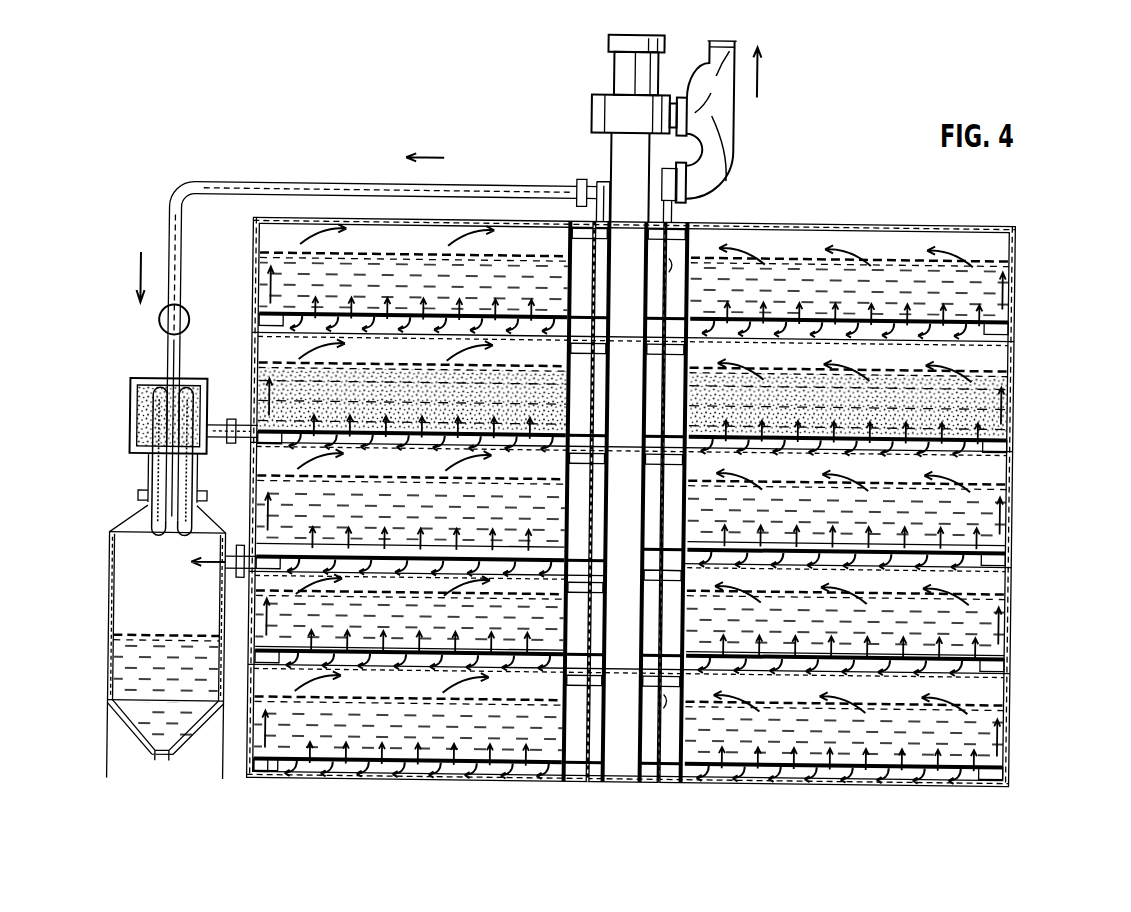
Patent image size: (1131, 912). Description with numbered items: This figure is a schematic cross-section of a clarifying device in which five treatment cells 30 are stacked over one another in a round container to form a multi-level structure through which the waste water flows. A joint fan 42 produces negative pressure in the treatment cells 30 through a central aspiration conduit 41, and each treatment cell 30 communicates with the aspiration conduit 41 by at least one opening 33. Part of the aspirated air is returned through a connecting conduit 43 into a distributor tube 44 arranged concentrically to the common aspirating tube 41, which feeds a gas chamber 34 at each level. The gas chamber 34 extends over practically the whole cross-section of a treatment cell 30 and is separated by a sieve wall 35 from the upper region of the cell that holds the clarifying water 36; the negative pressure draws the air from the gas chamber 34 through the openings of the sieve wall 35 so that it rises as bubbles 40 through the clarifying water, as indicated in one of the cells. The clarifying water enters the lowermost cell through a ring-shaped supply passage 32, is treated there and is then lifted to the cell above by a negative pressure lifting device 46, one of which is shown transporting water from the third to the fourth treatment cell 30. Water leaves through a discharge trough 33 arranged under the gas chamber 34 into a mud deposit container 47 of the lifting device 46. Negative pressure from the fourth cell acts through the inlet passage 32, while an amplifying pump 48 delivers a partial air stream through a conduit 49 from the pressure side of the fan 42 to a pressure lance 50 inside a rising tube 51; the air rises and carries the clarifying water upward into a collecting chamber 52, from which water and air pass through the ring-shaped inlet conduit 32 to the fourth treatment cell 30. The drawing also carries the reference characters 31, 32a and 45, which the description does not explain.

The treatment cell 30 is at (1034, 307).
The tank housing 31 is at (1014, 592).
The ring-shaped supply passage 32 is at (241, 426).
The drain outlet 32a is at (266, 784).
The opening 33 is at (595, 215).
The gas chamber 34 is at (256, 347).
The sieve wall 35 is at (520, 322).
The clarifying water 36 is at (1002, 263).
The bubbles 40 is at (1015, 393).
The central aspiration conduit 41 is at (606, 784).
The joint fan 42 is at (592, 112).
The connecting conduit 43 is at (733, 128).
The distributor tube 44 is at (664, 784).
The openings in riser pipe 45 is at (667, 268).
The negative pressure lifting device 46 is at (122, 433).
The mud deposit container 47 is at (112, 578).
The amplifying pump 48 is at (187, 323).
The conduit 49 is at (262, 186).
The pressure lance 50 is at (163, 458).
The rising tube 51 is at (190, 458).
The collecting chamber 52 is at (134, 394).